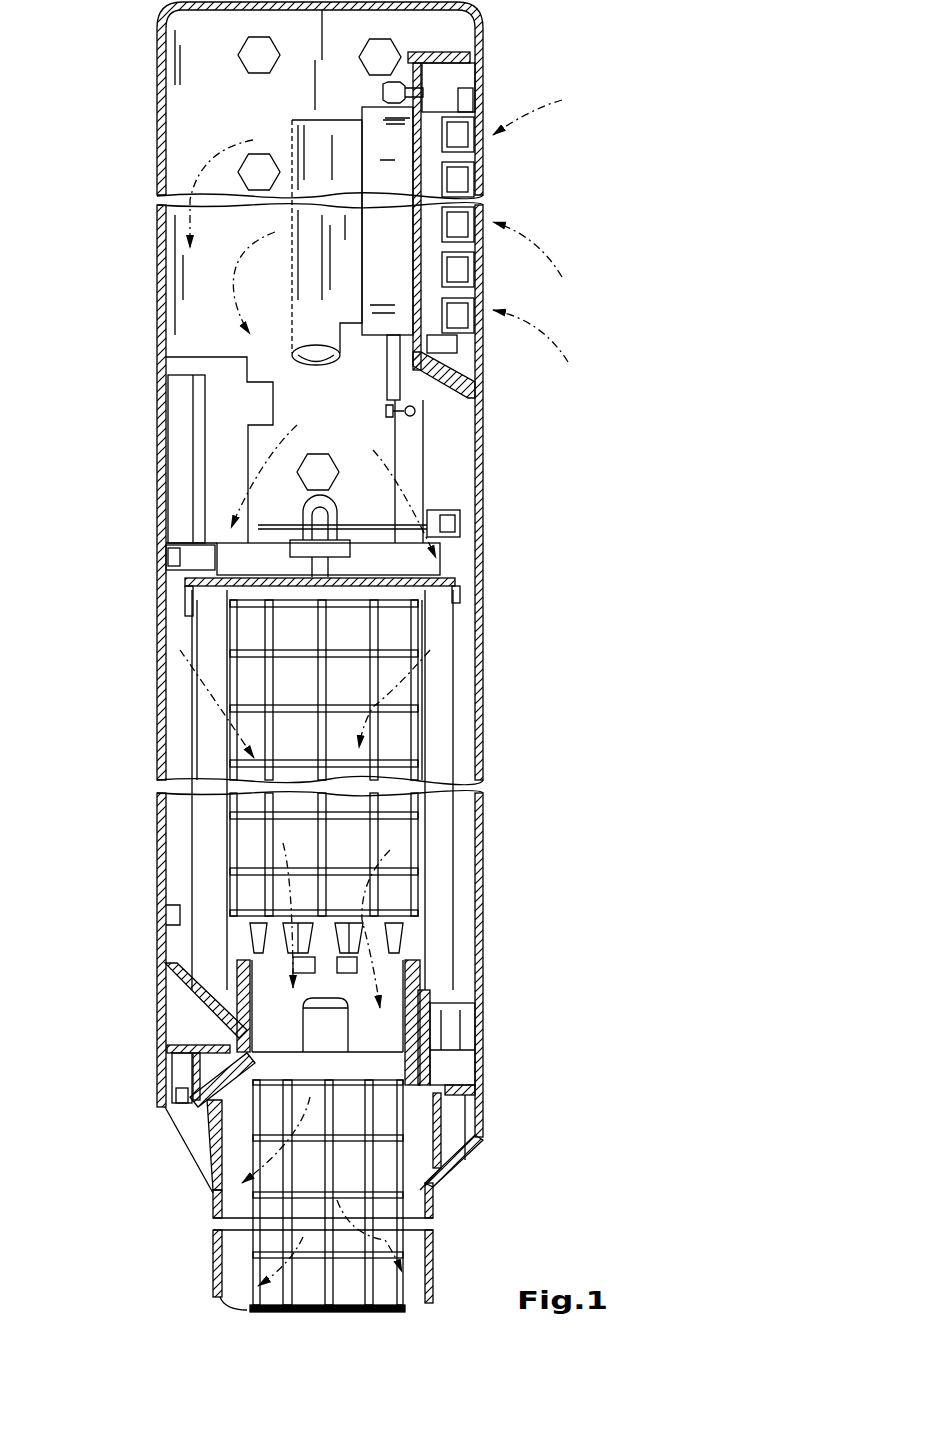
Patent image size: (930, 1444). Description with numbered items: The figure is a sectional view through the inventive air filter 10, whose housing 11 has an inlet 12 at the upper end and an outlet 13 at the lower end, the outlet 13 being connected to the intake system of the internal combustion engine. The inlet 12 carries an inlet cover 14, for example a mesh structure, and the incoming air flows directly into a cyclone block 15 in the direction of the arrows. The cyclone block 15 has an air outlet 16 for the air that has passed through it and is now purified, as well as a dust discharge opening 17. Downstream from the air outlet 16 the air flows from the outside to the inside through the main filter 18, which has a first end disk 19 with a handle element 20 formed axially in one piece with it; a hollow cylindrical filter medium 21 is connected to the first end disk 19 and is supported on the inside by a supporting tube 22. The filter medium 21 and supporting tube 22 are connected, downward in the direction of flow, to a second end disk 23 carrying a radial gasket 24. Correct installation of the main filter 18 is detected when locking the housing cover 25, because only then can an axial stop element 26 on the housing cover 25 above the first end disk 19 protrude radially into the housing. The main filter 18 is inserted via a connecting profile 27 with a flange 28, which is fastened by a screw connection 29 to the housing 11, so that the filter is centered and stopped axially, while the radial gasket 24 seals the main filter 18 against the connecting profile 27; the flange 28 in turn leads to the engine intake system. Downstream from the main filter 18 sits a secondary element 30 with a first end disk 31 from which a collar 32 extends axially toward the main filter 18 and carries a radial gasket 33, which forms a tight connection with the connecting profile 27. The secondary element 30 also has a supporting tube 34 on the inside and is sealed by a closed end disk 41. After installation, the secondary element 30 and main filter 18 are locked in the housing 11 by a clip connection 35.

The air filter 10 is at (115, 340).
The housing 11 is at (157, 123).
The inlet 12 is at (495, 173).
The outlet 13 is at (425, 1309).
The inlet cover 14 is at (484, 88).
The cyclone block 15 is at (375, 130).
The air outlet 16 is at (284, 134).
The dust discharge opening 17 is at (318, 372).
The main filter 18 is at (398, 630).
The first end disk 19 is at (456, 583).
The handle element 20 is at (327, 520).
The filter medium 21 is at (440, 706).
The supporting tube 22 is at (410, 758).
The second end disk 23 is at (453, 1008).
The radial gasket 24 is at (444, 1053).
The housing cover 25 is at (160, 470).
The axial stop element 26 is at (192, 550).
The connecting profile 27 is at (430, 1074).
The flange 28 is at (475, 1140).
The screw connection 29 is at (212, 1185).
The secondary element 30 is at (380, 1170).
The first end disk 31 is at (376, 1039).
The collar 32 is at (410, 918).
The radial gasket 33 is at (264, 1006).
The supporting tube 34 is at (388, 1240).
The clip connection 35 is at (455, 520).
The closed end disk 41 is at (275, 1312).